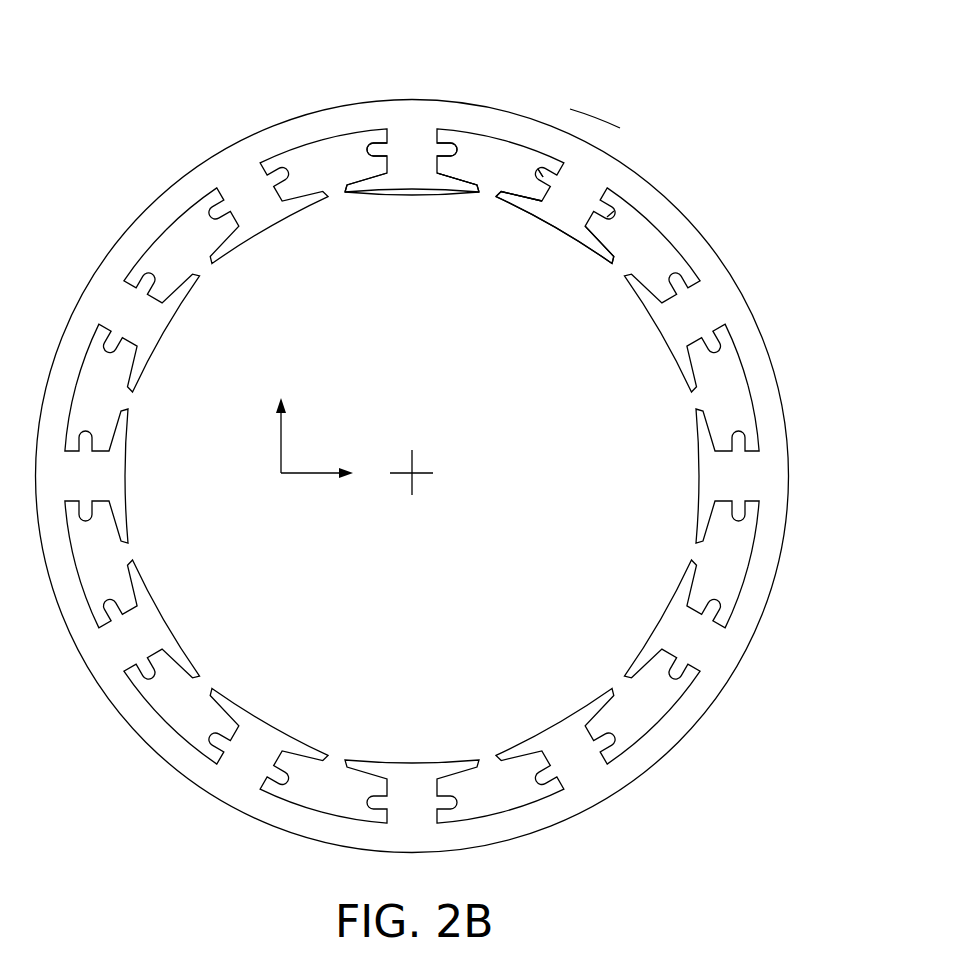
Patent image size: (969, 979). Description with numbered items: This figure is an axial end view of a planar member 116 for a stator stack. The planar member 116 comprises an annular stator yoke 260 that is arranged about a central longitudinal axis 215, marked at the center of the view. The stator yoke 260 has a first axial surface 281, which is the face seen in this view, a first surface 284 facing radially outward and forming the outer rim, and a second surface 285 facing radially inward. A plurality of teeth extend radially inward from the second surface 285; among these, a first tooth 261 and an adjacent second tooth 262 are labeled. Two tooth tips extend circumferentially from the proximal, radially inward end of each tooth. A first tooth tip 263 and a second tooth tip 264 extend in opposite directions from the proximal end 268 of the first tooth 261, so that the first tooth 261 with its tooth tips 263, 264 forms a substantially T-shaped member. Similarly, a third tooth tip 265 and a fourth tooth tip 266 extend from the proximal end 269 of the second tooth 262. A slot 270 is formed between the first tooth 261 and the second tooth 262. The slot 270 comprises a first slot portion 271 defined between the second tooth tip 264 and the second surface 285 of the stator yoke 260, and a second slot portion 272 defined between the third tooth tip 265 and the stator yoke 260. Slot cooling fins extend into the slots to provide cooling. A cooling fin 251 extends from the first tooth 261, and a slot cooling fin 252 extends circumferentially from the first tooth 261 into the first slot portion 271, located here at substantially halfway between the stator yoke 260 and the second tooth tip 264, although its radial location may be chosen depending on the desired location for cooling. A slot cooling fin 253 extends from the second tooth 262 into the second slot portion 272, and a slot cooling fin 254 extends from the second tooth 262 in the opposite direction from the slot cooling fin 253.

The planar member 116 is at (203, 114).
The central longitudinal axis 215 is at (412, 473).
The cooling fin 251 is at (372, 150).
The slot cooling fin 252 is at (449, 150).
The slot cooling fin 253 is at (547, 175).
The slot cooling fin 254 is at (610, 213).
The stator yoke 260 is at (498, 123).
The first tooth 261 is at (408, 150).
The second tooth 262 is at (573, 192).
The first tooth tip 263 is at (360, 190).
The second tooth tip 264 is at (462, 193).
The third tooth tip 265 is at (518, 203).
The fourth tooth tip 266 is at (597, 263).
The proximal end 268 is at (417, 193).
The proximal end 269 is at (568, 222).
The slot 270 is at (501, 148).
The first slot portion 271 is at (455, 180).
The second slot portion 272 is at (510, 197).
The first axial surface 281 is at (724, 298).
The first surface 284 is at (590, 143).
The second surface 285 is at (543, 160).